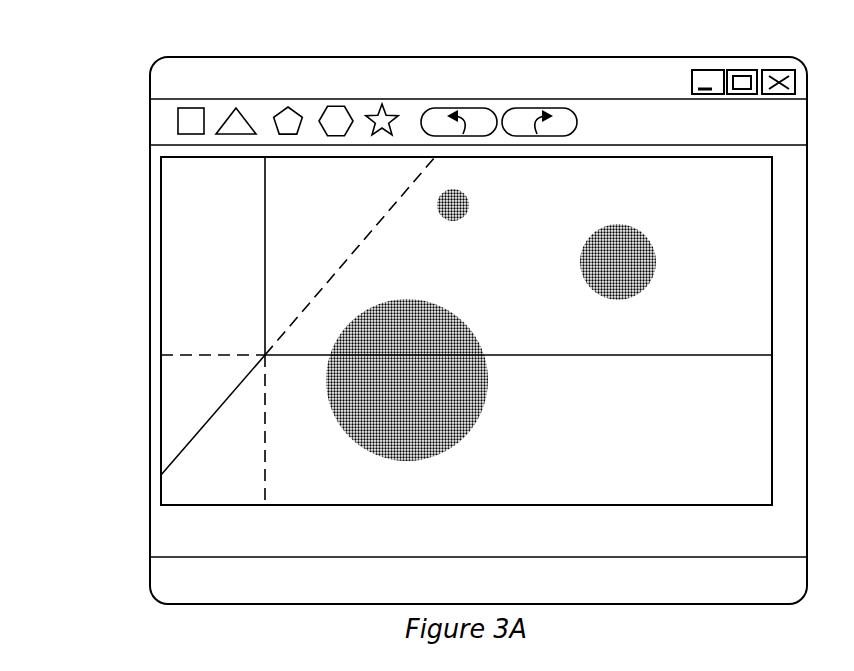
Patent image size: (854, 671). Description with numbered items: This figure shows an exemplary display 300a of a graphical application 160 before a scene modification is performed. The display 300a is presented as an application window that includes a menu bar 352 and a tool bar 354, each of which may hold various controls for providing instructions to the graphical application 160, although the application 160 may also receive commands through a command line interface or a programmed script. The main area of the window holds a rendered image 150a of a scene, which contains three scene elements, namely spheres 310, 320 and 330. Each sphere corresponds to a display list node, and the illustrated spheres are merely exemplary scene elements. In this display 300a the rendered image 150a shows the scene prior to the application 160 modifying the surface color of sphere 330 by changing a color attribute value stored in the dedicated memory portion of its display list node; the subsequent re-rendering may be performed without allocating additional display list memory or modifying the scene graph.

The display 300a is at (419, 305).
The graphical application 160 is at (627, 593).
The menu bar 352 is at (674, 93).
The tool bar 354 is at (675, 138).
The rendered image 150a is at (466, 331).
The sphere 310 is at (490, 235).
The sphere 320 is at (664, 238).
The sphere 330 is at (322, 256).